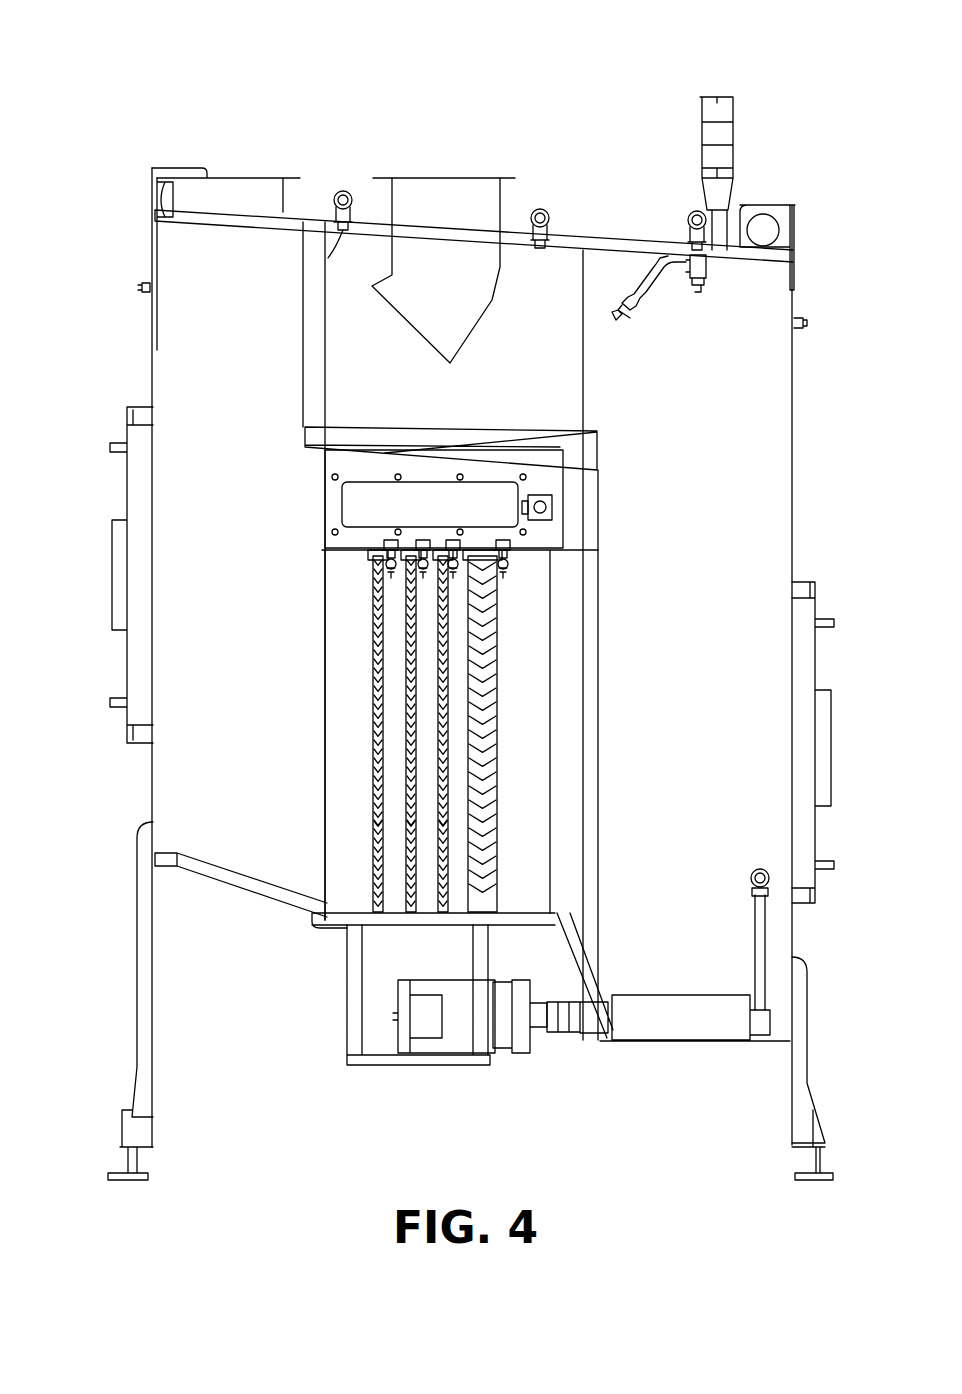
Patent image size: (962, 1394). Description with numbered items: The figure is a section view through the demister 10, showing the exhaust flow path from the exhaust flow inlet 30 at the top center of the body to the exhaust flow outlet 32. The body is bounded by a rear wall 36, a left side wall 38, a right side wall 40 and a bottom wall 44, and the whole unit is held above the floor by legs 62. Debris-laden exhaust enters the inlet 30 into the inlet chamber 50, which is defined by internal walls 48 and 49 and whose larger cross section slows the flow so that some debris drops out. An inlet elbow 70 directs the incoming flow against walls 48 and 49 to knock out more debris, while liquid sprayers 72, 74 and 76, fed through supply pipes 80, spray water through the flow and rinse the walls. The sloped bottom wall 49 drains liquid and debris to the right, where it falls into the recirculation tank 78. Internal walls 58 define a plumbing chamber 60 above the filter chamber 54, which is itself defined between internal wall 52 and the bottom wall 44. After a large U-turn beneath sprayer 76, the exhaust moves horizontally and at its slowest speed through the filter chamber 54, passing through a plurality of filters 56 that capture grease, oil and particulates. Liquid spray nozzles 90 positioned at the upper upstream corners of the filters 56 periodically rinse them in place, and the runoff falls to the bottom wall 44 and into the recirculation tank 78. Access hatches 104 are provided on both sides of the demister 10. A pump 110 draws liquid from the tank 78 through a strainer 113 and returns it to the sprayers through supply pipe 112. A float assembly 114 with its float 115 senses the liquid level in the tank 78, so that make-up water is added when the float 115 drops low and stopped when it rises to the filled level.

The demister 10 is at (764, 66).
The exhaust flow inlet 30 is at (445, 175).
The exhaust flow outlet 32 is at (222, 170).
The rear wall 36 is at (192, 265).
The left side wall 38 is at (152, 322).
The right side wall 40 is at (795, 392).
The bottom wall 44 is at (258, 906).
The internal wall 48 is at (301, 325).
The internal wall 49 is at (358, 432).
The inlet chamber 50 is at (552, 383).
The internal wall 52 is at (355, 556).
The filter chamber 54 is at (337, 866).
The filters 56 is at (440, 810).
The internal walls 58 is at (325, 503).
The plumbing chamber 60 is at (547, 532).
The legs 62 is at (143, 1050).
The inlet elbow 70 is at (468, 298).
The liquid sprayer 72 is at (300, 255).
The liquid sprayer 74 is at (616, 314).
The liquid sprayer 76 is at (698, 287).
The recirculation tank 78 is at (650, 977).
The supply pipes 80 is at (343, 191).
The liquid spray nozzles 90 is at (421, 578).
The access hatches 104 is at (125, 487).
The pump 110 is at (452, 1040).
The supply pipe 112 is at (571, 990).
The strainer 113 is at (713, 1020).
The float assembly 114 is at (766, 947).
The float 115 is at (771, 1013).